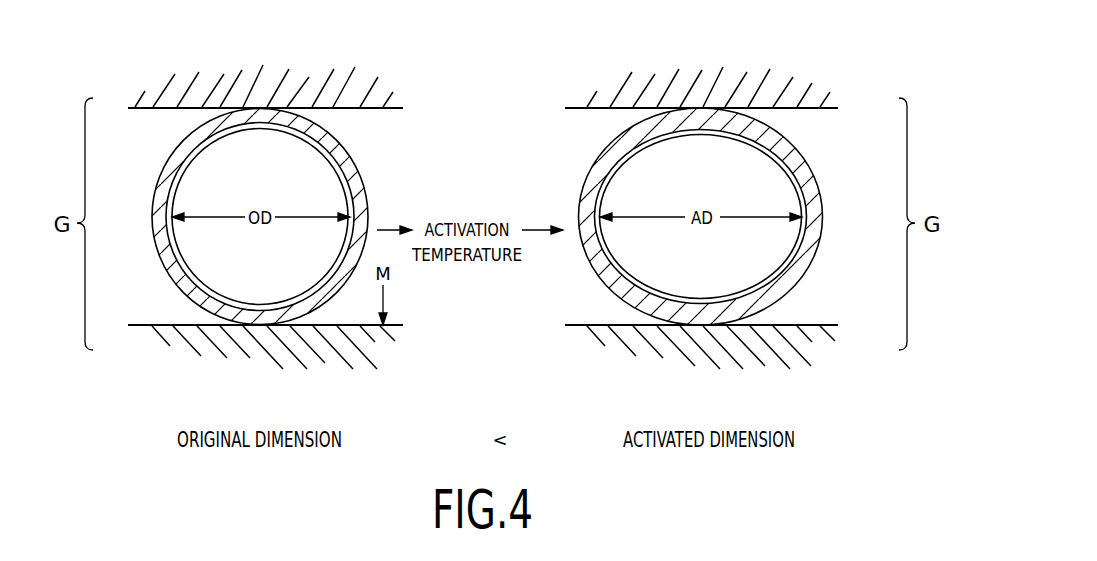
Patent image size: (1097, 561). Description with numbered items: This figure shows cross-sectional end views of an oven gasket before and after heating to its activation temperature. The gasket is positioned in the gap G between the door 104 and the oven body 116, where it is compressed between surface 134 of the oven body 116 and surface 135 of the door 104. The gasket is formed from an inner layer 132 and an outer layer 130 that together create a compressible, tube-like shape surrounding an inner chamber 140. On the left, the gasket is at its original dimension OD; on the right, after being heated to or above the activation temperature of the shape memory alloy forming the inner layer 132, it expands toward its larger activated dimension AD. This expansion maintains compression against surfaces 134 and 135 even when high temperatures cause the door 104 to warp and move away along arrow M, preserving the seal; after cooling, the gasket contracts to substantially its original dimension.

The door 104 is at (367, 342).
The oven body 116 is at (352, 86).
The outer layer 130 is at (172, 154).
The inner layer 132 is at (156, 247).
The surface of oven body 134 is at (369, 115).
The surface of oven door 135 is at (158, 322).
The inner chamber 140 is at (282, 191).